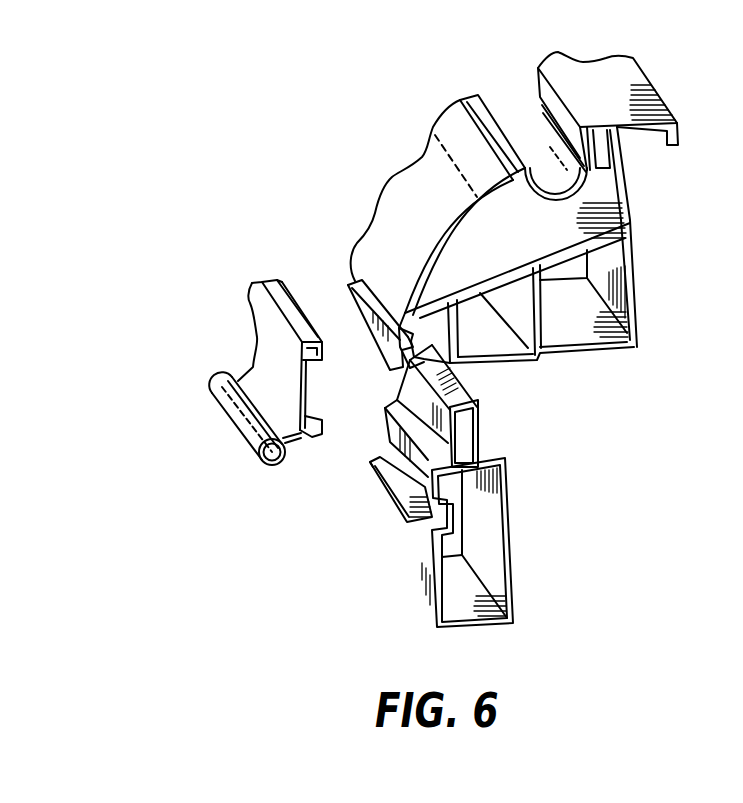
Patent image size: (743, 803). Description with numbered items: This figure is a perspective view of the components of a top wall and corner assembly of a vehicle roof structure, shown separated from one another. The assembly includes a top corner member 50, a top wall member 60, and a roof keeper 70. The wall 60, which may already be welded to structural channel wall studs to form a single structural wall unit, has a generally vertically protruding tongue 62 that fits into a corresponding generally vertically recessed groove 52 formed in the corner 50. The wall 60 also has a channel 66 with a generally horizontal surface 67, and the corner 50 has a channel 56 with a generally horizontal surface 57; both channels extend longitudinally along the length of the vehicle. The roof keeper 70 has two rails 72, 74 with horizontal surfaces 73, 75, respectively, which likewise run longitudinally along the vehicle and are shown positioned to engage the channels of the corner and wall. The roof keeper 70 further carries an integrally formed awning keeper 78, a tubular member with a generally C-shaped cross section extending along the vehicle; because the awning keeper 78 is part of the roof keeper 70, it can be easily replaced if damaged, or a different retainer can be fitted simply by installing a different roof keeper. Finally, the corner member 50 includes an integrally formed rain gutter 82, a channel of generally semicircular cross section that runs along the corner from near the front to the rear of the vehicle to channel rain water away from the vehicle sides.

The top corner member 50 is at (383, 163).
The groove 52 is at (442, 326).
The channel 56 is at (371, 302).
The horizontal surface 57 is at (363, 284).
The top wall member 60 is at (393, 574).
The tongue 62 is at (478, 412).
The channel 66 is at (403, 479).
The horizontal surface 67 is at (380, 458).
The roof keeper 70 is at (240, 330).
The rail 72 is at (348, 352).
The horizontal surface 73 is at (306, 379).
The rail 74 is at (311, 466).
The horizontal surface 75 is at (320, 418).
The awning keeper 78 is at (228, 416).
The rain gutter 82 is at (533, 128).